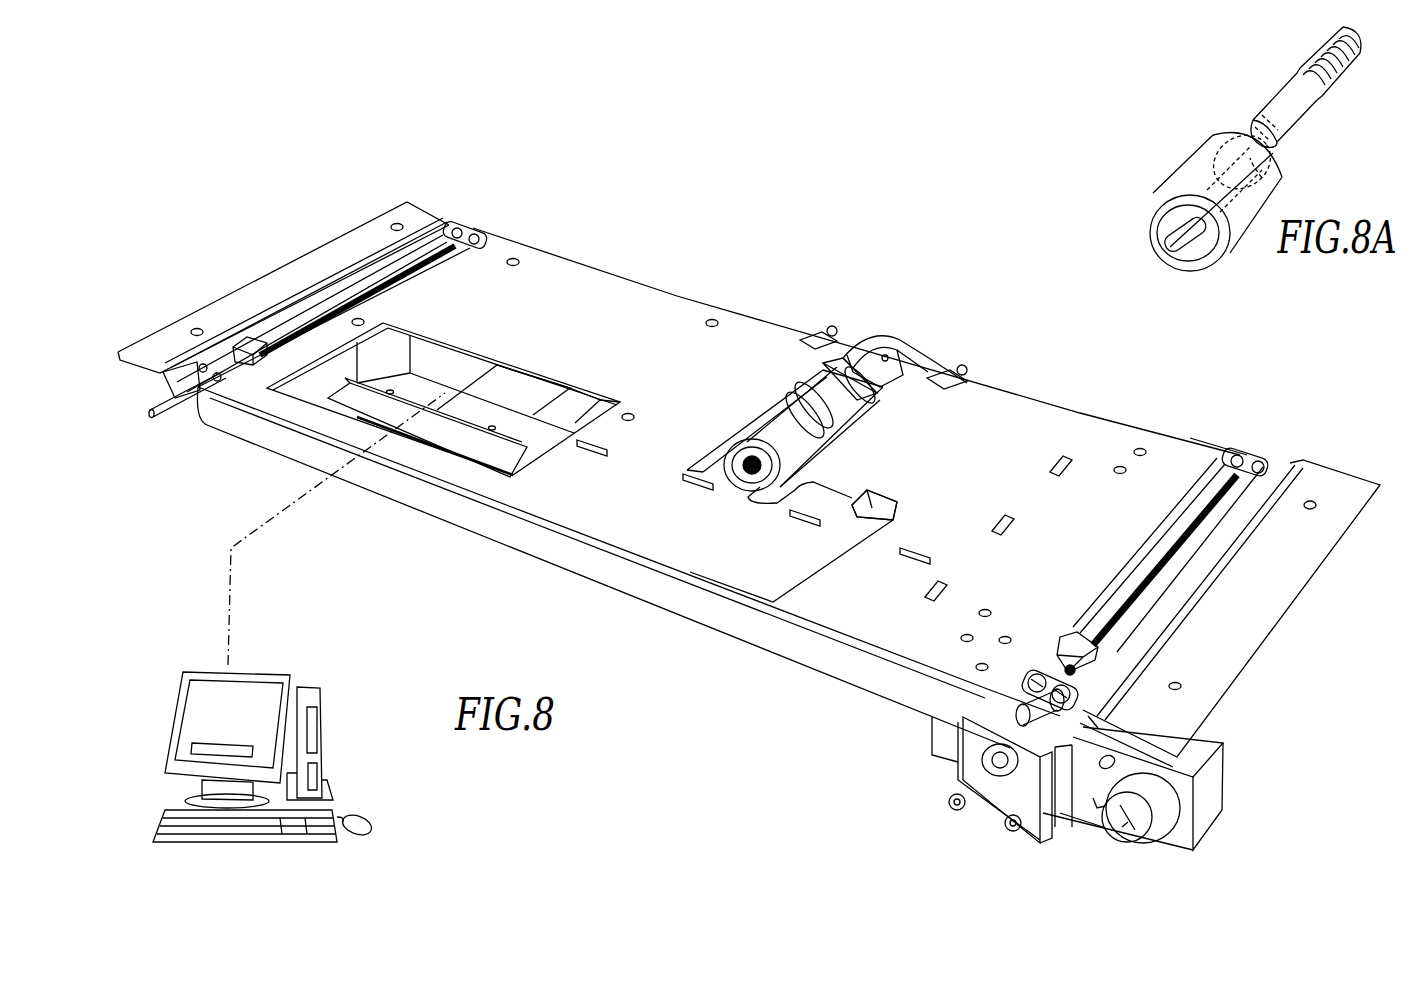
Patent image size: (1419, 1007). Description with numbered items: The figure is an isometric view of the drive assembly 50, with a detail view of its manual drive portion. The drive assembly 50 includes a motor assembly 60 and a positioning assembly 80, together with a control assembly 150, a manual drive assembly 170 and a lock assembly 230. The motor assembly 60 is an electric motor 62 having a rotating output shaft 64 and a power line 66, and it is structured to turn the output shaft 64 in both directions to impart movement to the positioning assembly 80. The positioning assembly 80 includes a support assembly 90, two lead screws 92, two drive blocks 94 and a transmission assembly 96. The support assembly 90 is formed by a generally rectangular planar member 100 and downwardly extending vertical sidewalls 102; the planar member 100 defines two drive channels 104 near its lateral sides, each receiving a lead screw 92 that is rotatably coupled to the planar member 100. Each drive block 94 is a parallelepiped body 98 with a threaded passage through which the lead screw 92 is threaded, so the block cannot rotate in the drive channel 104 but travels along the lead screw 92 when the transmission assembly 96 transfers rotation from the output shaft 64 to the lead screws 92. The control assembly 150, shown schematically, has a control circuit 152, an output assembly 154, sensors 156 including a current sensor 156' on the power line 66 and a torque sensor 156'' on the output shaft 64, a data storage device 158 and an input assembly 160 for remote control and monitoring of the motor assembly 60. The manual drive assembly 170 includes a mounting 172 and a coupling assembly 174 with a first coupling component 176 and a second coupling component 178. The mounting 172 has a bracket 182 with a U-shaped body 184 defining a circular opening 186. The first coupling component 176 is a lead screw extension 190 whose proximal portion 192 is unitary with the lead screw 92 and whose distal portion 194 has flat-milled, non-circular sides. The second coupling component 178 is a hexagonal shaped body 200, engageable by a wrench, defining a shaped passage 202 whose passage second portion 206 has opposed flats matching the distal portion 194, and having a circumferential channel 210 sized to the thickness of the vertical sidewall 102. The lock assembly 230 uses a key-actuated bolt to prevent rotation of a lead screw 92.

In FIG. 8, the drive assembly 50 is at (238, 268).
In FIG. 8, the motor assembly 60 is at (846, 306).
In FIG. 8, the electric motor 62 is at (785, 437).
In FIG. 8, the output shaft 64 is at (892, 385).
In FIG. 8, the power line 66 is at (855, 535).
In FIG. 8, the positioning assembly 80 is at (1277, 442).
In FIG. 8, the support assembly 90 is at (446, 505).
In FIG. 8, the lead screw 92 is at (178, 416).
In FIG. 8, the drive block 94 is at (240, 346).
In FIG. 8, the transmission assembly 96 is at (905, 340).
In FIG. 8, the parallelepiped body 98 is at (256, 332).
In FIG. 8, the planar member 100 is at (497, 278).
In FIG. 8, the vertical sidewall 102 is at (708, 608).
In FIG. 8, the drive channel 104 is at (437, 228).
In FIG. 8, the control assembly 150 is at (500, 378).
In FIG. 8, the control circuit 152 is at (445, 370).
In FIG. 8, the output assembly 154 is at (590, 405).
In FIG. 8, the sensor 156 is at (814, 589).
In FIG. 8, the current sensor 156' is at (877, 482).
In FIG. 8, the torque sensor 156'' is at (817, 372).
In FIG. 8, the data storage device 158 is at (524, 396).
In FIG. 8, the input assembly 160 is at (548, 435).
In FIG. 8, the manual drive assembly 170 is at (968, 825).
In FIG. 8, the mounting 172 is at (935, 758).
In FIG. 8, the coupling assembly 174 is at (950, 707).
In FIG. 8, the first coupling component 176 is at (988, 765).
In FIG. 8, the second coupling component 178 is at (1000, 705).
In FIG. 8, the bracket 182 is at (1032, 843).
In FIG. 8, the U-shaped body 184 is at (1065, 815).
In FIG. 8, the opening 186 is at (1020, 782).
In FIG. 8A, the lead screw extension 190 is at (1277, 100).
In FIG. 8A, the proximal portion 192 is at (1280, 78).
In FIG. 8A, the distal portion 194 is at (1282, 124).
In FIG. 8A, the shaped body 200 is at (1190, 170).
In FIG. 8A, the shaped passage 202 is at (1280, 174).
In FIG. 8A, the passage second portion 206 is at (1165, 250).
In FIG. 8, the circumferential channel 210 is at (1092, 706).
In FIG. 8, the lock assembly 230 is at (1097, 726).